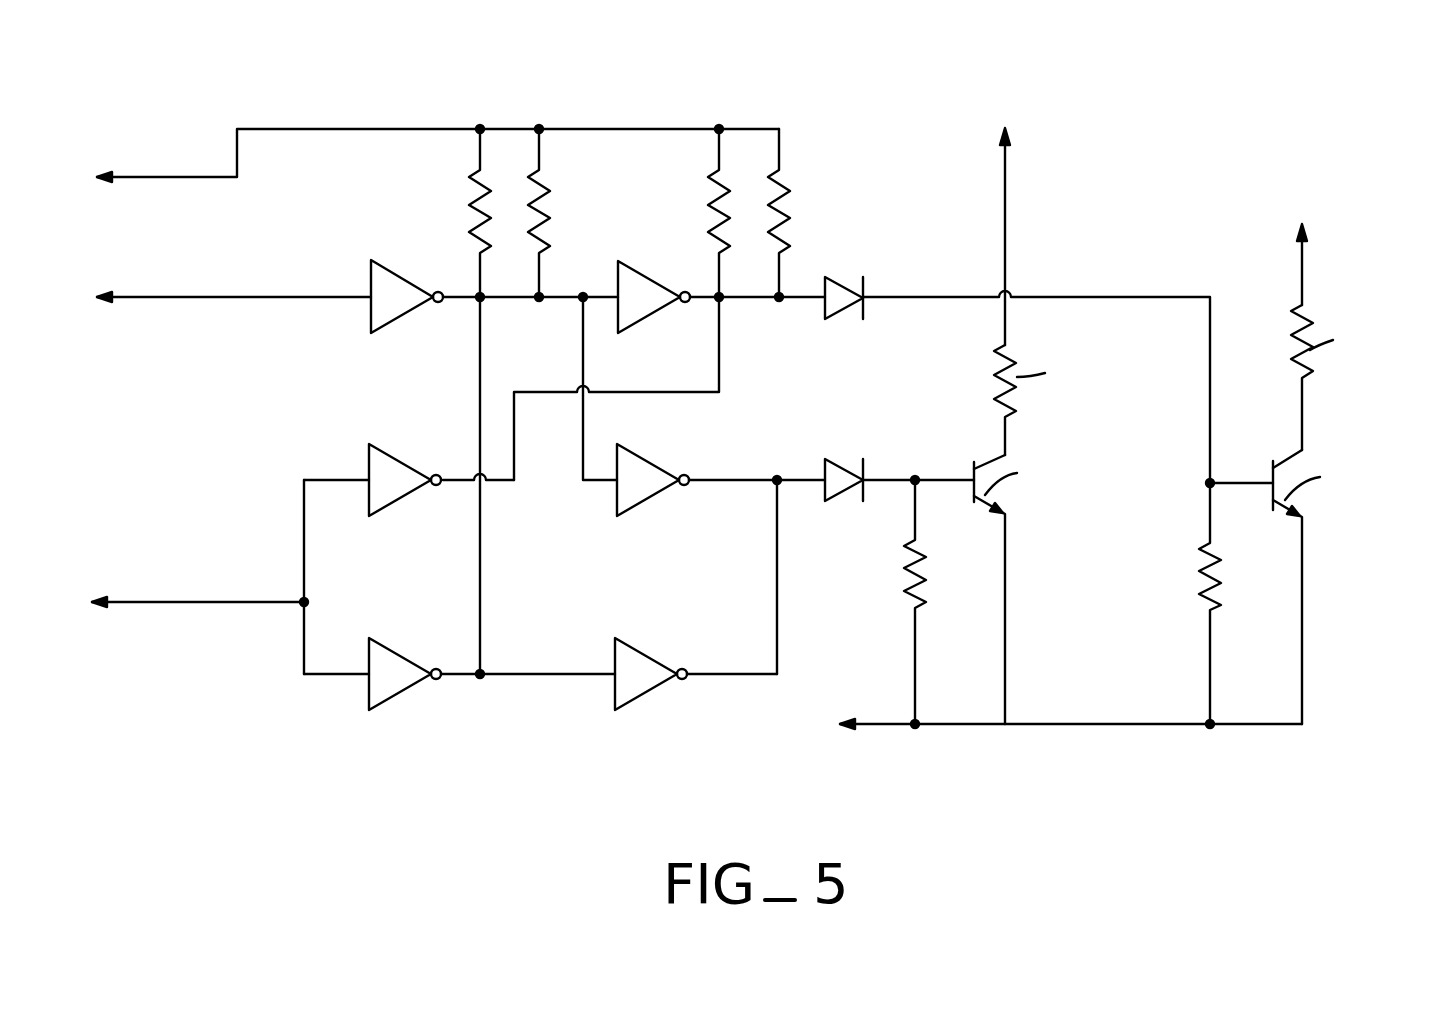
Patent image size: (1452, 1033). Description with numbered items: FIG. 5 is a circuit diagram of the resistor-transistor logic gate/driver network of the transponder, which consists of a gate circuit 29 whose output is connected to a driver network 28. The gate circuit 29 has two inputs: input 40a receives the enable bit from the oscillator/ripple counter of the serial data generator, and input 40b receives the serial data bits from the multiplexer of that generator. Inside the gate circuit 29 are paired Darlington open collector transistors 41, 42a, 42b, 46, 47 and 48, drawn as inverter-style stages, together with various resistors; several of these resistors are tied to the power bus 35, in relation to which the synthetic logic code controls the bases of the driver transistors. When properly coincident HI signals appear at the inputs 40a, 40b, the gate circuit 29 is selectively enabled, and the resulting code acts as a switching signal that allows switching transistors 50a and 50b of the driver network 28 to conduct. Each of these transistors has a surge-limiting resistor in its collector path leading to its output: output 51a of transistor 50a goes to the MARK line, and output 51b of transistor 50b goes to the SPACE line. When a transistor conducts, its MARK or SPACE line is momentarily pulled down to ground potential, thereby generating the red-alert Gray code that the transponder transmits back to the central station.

The gate circuit 29 is at (448, 95).
The power bus 35 is at (615, 129).
The input 40a is at (337, 295).
The input 40b is at (227, 597).
The Darlington open collector transistor 41 is at (398, 270).
The Darlington open collector transistor 42a is at (640, 268).
The Darlington open collector transistor 42b is at (655, 466).
The Darlington open collector transistor 46 is at (404, 470).
The Darlington open collector transistor 47 is at (405, 665).
The Darlington open collector transistor 48 is at (650, 657).
The driver network 28 is at (905, 422).
The switching transistor 50a is at (1295, 462).
The switching transistor 50b is at (987, 458).
The output 51a is at (1302, 268).
The output 51b is at (1005, 332).